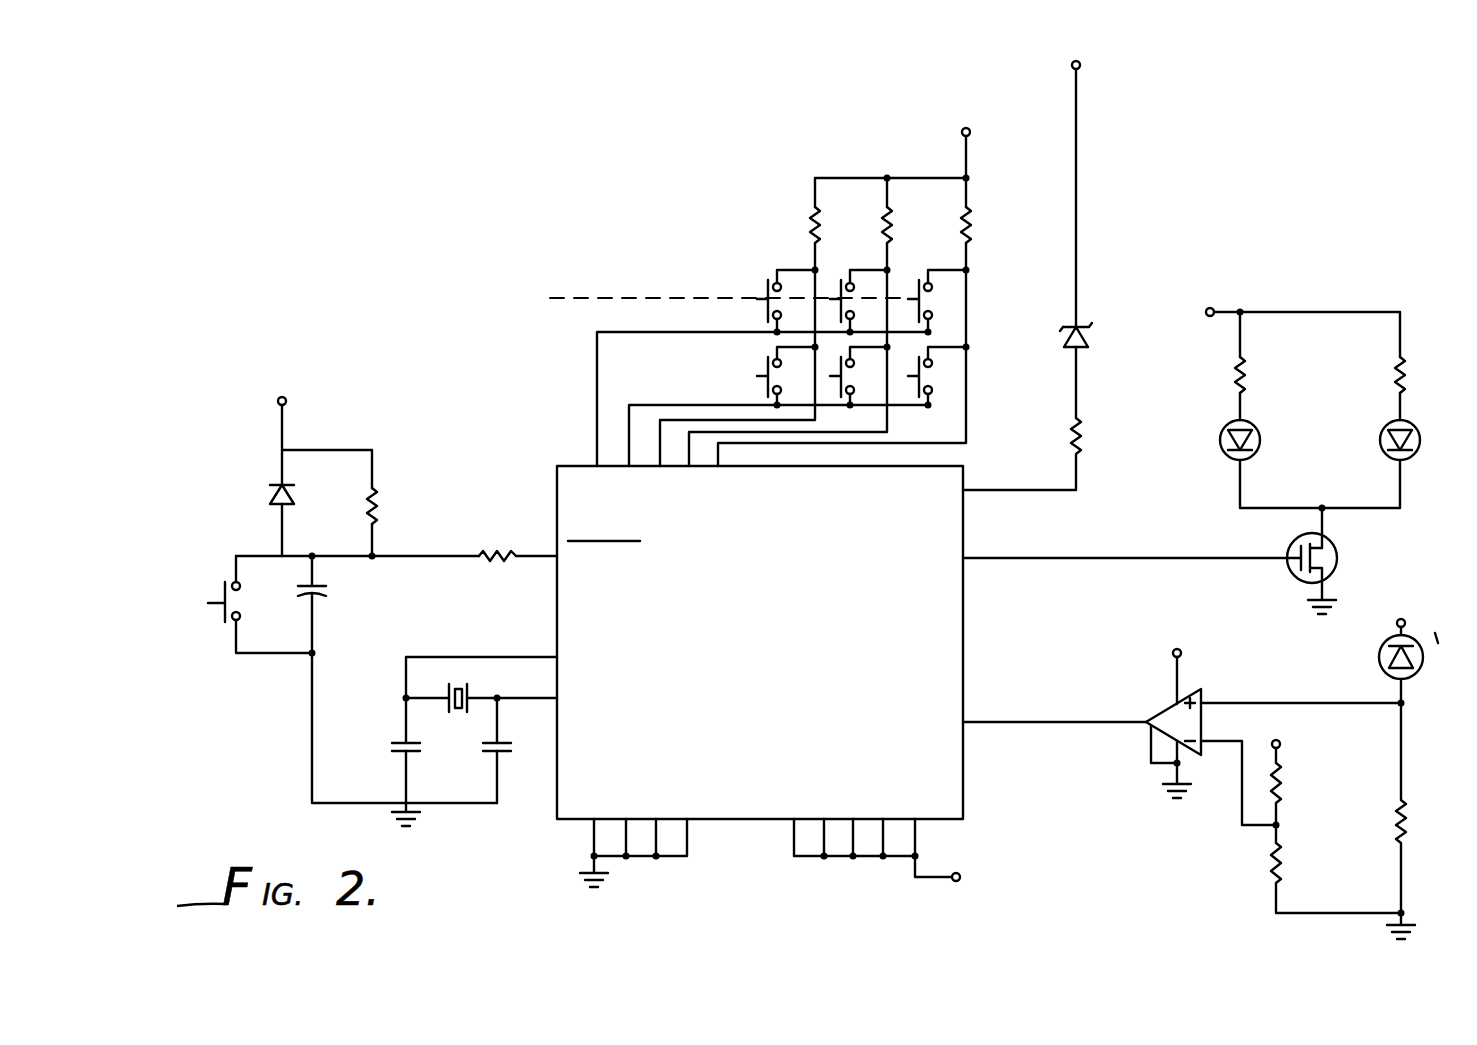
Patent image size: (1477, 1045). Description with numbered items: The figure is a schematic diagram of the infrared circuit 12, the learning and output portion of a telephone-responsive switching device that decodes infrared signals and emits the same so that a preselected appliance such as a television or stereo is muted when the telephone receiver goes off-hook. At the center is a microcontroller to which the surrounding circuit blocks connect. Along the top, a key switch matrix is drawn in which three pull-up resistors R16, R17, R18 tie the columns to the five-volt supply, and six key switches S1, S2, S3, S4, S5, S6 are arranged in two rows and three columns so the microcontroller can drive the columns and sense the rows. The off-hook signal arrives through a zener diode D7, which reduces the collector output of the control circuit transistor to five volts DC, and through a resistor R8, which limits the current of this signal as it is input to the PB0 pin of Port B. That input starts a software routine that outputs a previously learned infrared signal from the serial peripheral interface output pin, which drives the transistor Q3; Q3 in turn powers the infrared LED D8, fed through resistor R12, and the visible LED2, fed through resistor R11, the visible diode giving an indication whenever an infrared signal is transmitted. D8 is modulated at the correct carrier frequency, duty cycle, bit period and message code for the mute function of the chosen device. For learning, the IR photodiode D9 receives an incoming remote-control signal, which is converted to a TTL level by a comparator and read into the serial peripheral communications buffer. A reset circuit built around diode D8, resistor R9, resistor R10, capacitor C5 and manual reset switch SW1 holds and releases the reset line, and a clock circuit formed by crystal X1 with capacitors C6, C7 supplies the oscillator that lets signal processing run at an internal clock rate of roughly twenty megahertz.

The infrared circuit 12 is at (1243, 197).
The pull-up resistor R16 is at (793, 226).
The pull-up resistor R17 is at (864, 226).
The pull-up resistor R18 is at (941, 226).
The key switch S1 is at (756, 297).
The key switch S2 is at (837, 288).
The key switch S3 is at (913, 289).
The key switch S4 is at (757, 366).
The key switch S5 is at (837, 365).
The key switch S6 is at (913, 365).
The diode D7 is at (1098, 359).
The resistor R8 is at (1082, 436).
The resistor 220 R11 is at (1241, 375).
The resistor 10 R12 is at (1392, 375).
The visible LED LED2 is at (1228, 451).
The transistor Q3 is at (1279, 571).
The IR photodiode D9 is at (1340, 653).
The IR LED D8 is at (234, 502).
The resistor 47K R9 is at (380, 506).
The resistor 2.7K R10 is at (491, 562).
The manual reset switch SW1 is at (195, 595).
The capacitor .47uF C5 is at (327, 606).
The crystal 19.66081 Hz X1 is at (454, 713).
The capacitor 15pF C6 is at (417, 764).
The capacitor 15pF C7 is at (514, 753).